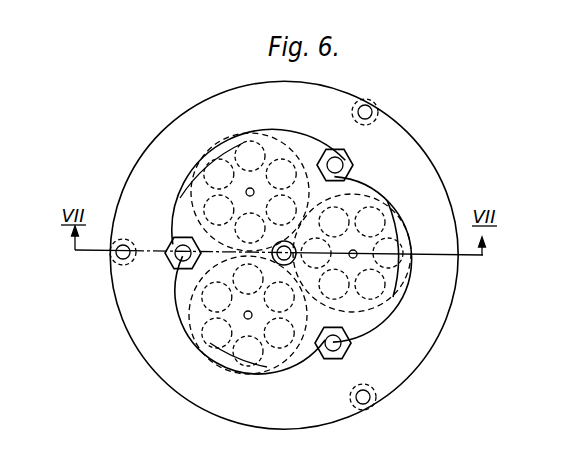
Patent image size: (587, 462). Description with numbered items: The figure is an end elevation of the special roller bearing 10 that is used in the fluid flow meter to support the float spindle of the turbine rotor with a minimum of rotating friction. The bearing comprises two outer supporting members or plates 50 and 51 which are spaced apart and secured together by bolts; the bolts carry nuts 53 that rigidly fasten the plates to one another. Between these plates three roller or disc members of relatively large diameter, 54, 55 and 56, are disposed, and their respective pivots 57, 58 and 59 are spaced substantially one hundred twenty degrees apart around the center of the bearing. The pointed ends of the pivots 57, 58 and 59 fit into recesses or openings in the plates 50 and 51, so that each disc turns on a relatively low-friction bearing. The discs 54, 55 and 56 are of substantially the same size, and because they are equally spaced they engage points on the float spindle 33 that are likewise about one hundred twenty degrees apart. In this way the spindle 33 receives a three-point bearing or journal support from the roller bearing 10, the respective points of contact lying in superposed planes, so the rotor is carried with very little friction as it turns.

The roller bearing 10 is at (89, 141).
The float spindle 33 is at (293, 245).
The outer supporting plate 50 is at (375, 182).
The outer supporting plate 51 is at (452, 307).
The nut 53 is at (170, 258).
The roller disc member 54 is at (408, 225).
The roller disc member 55 is at (227, 372).
The roller disc member 56 is at (213, 143).
The pivot 57 is at (356, 258).
The pivot 58 is at (244, 318).
The pivot 59 is at (249, 188).